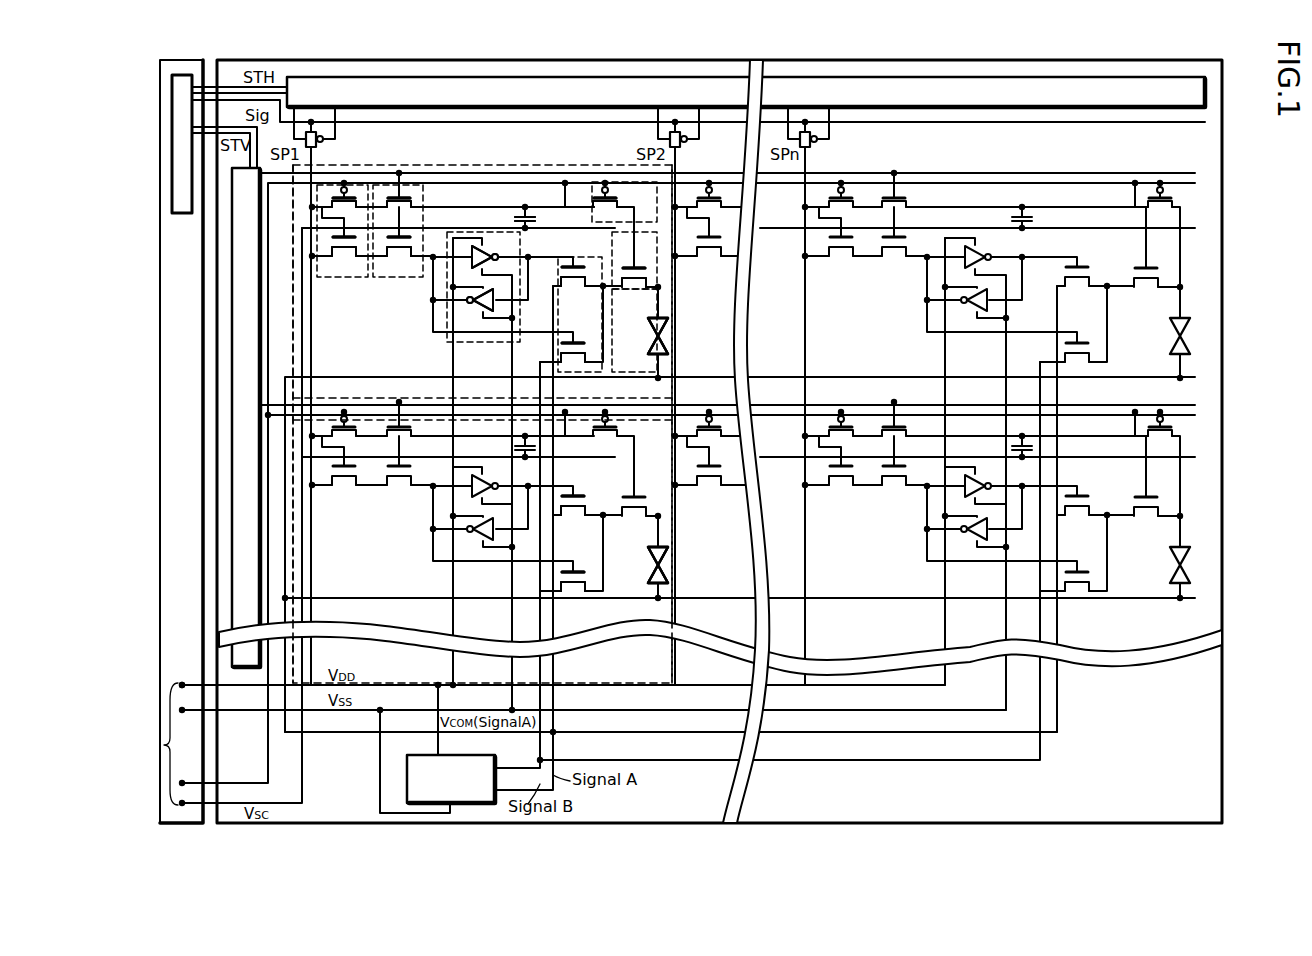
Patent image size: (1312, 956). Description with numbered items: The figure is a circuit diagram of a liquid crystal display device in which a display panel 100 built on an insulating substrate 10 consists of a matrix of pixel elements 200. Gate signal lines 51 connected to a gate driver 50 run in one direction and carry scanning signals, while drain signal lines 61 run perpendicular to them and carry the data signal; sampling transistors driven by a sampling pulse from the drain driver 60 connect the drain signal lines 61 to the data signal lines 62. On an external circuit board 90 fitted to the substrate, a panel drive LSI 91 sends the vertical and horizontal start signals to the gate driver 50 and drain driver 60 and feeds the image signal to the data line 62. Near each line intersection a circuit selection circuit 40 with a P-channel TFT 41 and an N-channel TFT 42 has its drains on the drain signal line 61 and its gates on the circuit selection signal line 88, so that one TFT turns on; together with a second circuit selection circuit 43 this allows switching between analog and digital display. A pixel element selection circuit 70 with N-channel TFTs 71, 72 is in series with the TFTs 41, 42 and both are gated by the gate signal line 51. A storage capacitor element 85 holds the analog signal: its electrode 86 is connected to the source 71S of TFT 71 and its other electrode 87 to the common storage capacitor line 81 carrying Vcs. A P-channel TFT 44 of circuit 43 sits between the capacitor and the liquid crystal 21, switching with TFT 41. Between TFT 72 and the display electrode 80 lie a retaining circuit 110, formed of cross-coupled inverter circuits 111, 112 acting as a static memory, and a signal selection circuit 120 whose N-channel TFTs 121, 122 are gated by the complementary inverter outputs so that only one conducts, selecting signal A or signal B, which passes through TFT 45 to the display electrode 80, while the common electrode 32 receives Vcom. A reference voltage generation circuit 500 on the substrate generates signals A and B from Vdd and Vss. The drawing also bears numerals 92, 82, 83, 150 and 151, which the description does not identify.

The insulating substrate 10 is at (482, 77).
The display panel 100 is at (733, 52).
The drain driver 60 is at (625, 79).
The gate driver 50 is at (203, 502).
The external circuit board 90 is at (165, 590).
The panel drive LSI 91 is at (181, 72).
The power supply terminals 92 is at (161, 743).
The gate signal line 51 is at (346, 170).
The drain signal line 61 is at (293, 299).
The data signal line 62 is at (492, 124).
The source of TFT 71 71S is at (438, 192).
The circuit selection signal line 88 is at (564, 174).
The common storage capacitor line 81 is at (302, 542).
The power supply line VDD 82 is at (553, 673).
The counter electrode line 83 is at (546, 620).
The electrode 87 is at (526, 229).
The electrode 86 is at (524, 208).
The storage capacitor element 85 is at (514, 223).
The circuit selection circuit 40 is at (342, 280).
The P-channel TFT 41 is at (350, 212).
The N-channel TFT 42 is at (344, 257).
The pixel element selection circuit 70 is at (396, 280).
The N-channel TFT 71 is at (404, 212).
The N-channel TFT 72 is at (399, 257).
The circuit selection circuit 43 is at (622, 294).
The P-channel TFT 44 is at (624, 202).
The TFT 45 is at (636, 260).
The retaining circuit 110 is at (483, 343).
The inverter circuit 111 is at (492, 258).
The inverter circuit 112 is at (475, 312).
The signal selection circuit 120 is at (601, 371).
The N-channel TFT 121 is at (580, 265).
The N-channel TFT 122 is at (584, 340).
The pixel circuit 150 is at (453, 387).
The pixel circuit 151 is at (535, 392).
The pixel element 200 is at (674, 379).
The liquid crystal 21 is at (670, 335).
The common electrode 32 is at (675, 352).
The display electrode 80 is at (655, 340).
The reference voltage generation circuit 500 is at (480, 755).